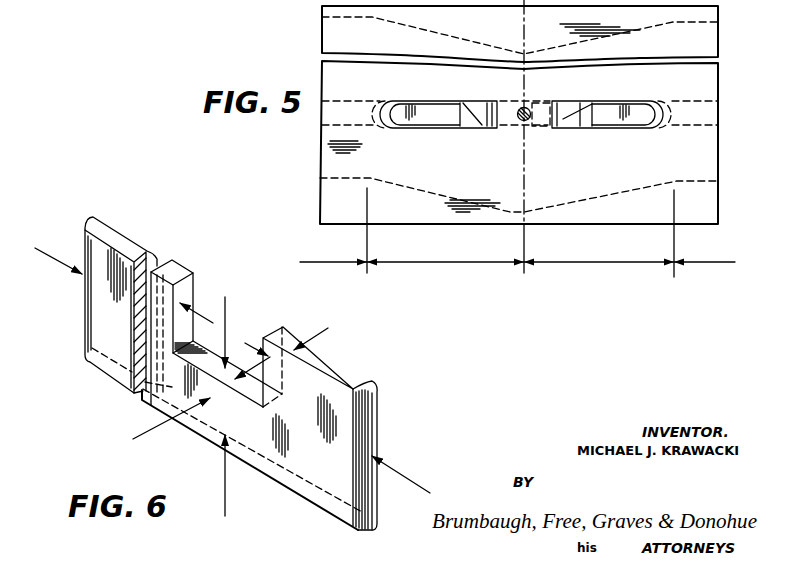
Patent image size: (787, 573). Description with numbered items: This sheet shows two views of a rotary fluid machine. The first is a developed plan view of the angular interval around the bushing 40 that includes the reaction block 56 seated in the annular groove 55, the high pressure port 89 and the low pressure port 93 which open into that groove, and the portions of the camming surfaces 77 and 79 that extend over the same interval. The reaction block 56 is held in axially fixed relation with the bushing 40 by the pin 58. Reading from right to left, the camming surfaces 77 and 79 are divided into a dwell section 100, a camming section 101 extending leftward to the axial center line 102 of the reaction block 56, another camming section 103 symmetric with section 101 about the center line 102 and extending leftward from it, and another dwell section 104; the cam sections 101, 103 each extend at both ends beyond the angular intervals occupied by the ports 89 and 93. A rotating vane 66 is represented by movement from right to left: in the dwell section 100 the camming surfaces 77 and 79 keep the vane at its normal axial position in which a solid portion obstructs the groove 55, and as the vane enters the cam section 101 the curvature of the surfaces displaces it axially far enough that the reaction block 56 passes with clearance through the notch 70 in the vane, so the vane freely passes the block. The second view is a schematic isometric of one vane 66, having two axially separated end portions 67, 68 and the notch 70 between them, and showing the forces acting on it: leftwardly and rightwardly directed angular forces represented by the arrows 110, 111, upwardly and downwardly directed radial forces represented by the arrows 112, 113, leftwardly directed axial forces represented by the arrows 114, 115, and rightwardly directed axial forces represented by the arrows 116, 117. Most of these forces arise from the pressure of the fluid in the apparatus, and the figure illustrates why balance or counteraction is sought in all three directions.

In FIG. 5, the bushing 40 is at (527, 138).
In FIG. 5, the annular groove 55 is at (428, 118).
In FIG. 5, the reaction block 56 is at (542, 118).
In FIG. 5, the pin 58 is at (521, 128).
In FIG. 5, the vane 66 is at (458, 116).
In FIG. 6, the vane 66 is at (103, 364).
In FIG. 6, the end portion 67 is at (330, 472).
In FIG. 6, the end portion 68 is at (85, 313).
In FIG. 6, the notch 70 is at (216, 333).
In FIG. 5, the camming surface 77 is at (464, 41).
In FIG. 5, the camming surface 79 is at (606, 202).
In FIG. 5, the high pressure port 89 is at (606, 120).
In FIG. 5, the low pressure port 93 is at (443, 118).
In FIG. 5, the dwell section 100 is at (699, 263).
In FIG. 5, the camming section 101 is at (597, 263).
In FIG. 5, the axial center line 102 is at (521, 265).
In FIG. 5, the camming section 103 is at (457, 263).
In FIG. 5, the dwell section 104 is at (333, 263).
In FIG. 6, the arrow 110 is at (317, 329).
In FIG. 6, the arrow 111 is at (140, 441).
In FIG. 6, the arrow 112 is at (230, 300).
In FIG. 6, the arrow 113 is at (228, 489).
In FIG. 6, the arrow 114 is at (402, 482).
In FIG. 6, the arrow 115 is at (209, 310).
In FIG. 6, the arrow 116 is at (258, 347).
In FIG. 6, the arrow 117 is at (52, 264).